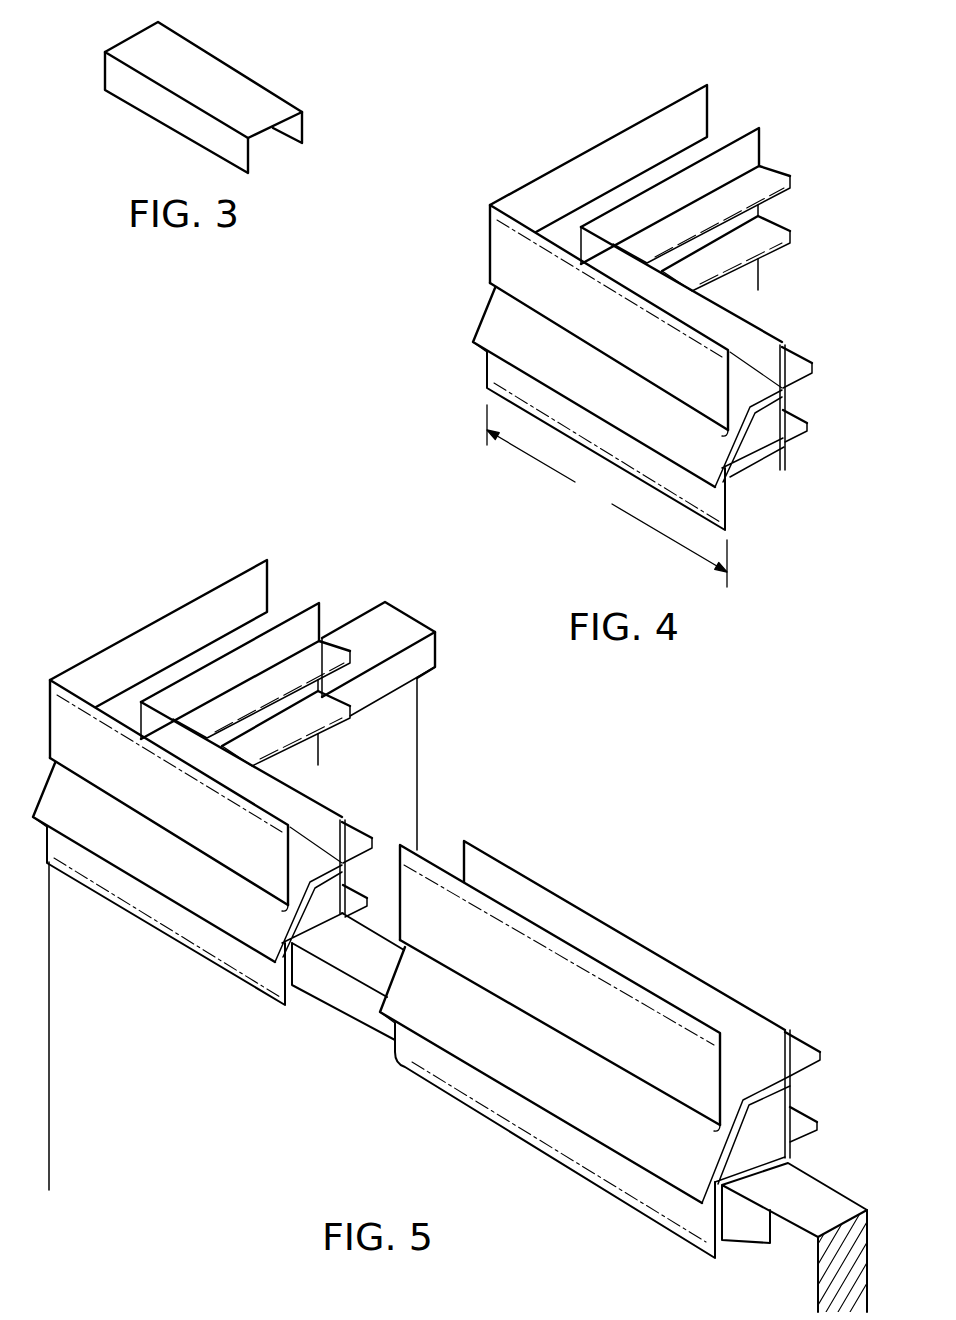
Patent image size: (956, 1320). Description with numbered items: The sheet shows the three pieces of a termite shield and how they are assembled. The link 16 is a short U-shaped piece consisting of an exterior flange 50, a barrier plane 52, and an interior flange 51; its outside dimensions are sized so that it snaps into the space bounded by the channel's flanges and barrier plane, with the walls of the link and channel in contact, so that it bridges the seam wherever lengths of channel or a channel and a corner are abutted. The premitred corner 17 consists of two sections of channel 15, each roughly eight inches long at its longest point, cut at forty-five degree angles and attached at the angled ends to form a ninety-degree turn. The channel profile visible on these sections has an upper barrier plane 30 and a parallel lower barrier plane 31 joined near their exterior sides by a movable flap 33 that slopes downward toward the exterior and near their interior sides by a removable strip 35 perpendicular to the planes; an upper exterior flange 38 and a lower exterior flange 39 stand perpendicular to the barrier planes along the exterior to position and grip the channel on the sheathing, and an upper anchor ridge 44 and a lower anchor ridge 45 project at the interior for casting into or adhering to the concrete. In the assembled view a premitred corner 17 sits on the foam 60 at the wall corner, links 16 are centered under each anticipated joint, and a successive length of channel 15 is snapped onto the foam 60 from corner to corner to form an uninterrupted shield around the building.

In FIG. 5, the channel 15 is at (633, 937).
In FIG. 3, the link 16 is at (225, 86).
In FIG. 5, the link 16 is at (420, 657).
In FIG. 4, the premitred corner 17 is at (607, 331).
In FIG. 5, the premitred corner 17 is at (152, 905).
In FIG. 4, the upper barrier plane 30 is at (720, 140).
In FIG. 4, the lower barrier plane 31 is at (745, 462).
In FIG. 4, the movable flap 33 is at (490, 318).
In FIG. 4, the removable strip 35 is at (763, 212).
In FIG. 4, the upper exterior flange 38 is at (565, 163).
In FIG. 4, the lower exterior flange 39 is at (487, 368).
In FIG. 4, the upper anchor ridge 44 is at (793, 180).
In FIG. 4, the lower anchor ridge 45 is at (792, 236).
In FIG. 3, the exterior flange 50 is at (140, 97).
In FIG. 3, the interior flange 51 is at (303, 127).
In FIG. 3, the barrier plane 52 is at (143, 42).
In FIG. 5, the foam 60 is at (845, 1200).